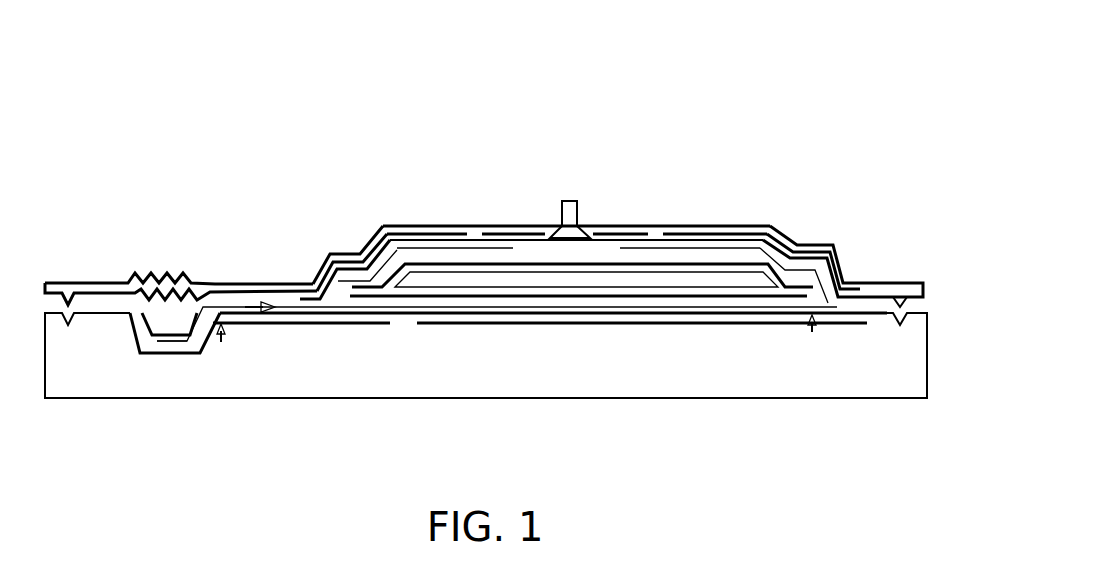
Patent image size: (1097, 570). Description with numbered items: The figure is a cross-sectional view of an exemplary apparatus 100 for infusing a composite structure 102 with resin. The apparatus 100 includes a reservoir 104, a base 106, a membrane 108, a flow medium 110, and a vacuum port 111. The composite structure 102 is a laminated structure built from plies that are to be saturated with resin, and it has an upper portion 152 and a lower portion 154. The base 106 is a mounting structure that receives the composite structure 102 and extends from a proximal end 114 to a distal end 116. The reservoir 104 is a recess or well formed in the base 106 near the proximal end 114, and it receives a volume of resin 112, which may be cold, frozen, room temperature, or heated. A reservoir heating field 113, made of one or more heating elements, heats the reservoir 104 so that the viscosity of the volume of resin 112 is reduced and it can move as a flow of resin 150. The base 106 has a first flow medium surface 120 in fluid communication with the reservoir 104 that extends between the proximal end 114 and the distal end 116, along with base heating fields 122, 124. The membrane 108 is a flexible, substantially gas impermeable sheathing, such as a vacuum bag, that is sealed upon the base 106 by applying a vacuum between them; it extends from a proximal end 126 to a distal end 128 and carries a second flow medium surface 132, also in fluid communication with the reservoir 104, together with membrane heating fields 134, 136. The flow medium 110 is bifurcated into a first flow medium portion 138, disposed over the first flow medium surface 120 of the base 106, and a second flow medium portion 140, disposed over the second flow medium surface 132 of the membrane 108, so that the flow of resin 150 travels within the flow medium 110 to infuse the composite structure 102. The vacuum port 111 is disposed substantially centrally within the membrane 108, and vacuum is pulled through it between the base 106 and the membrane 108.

The apparatus 100 is at (687, 78).
The composite structure 102 is at (747, 280).
The reservoir 104 is at (137, 333).
The base 106 is at (928, 357).
The membrane 108 is at (613, 224).
The flow medium 110 is at (253, 324).
The vacuum port 111 is at (570, 198).
The volume of resin 112 is at (153, 320).
The reservoir heating field 113 is at (167, 356).
The proximal end 114 is at (222, 344).
The distal end 116 is at (808, 334).
The first flow medium surface 120 is at (437, 316).
The base heating field 122 is at (297, 315).
The base heating field 124 is at (578, 324).
The proximal end 126 is at (60, 283).
The distal end 128 is at (925, 288).
The second flow medium surface 132 is at (316, 268).
The membrane heating field 134 is at (408, 229).
The membrane heating field 136 is at (495, 232).
The first flow medium portion 138 is at (383, 300).
The second flow medium portion 140 is at (452, 243).
The flow of resin 150 is at (248, 303).
The upper portion 152 is at (662, 270).
The lower portion 154 is at (667, 298).